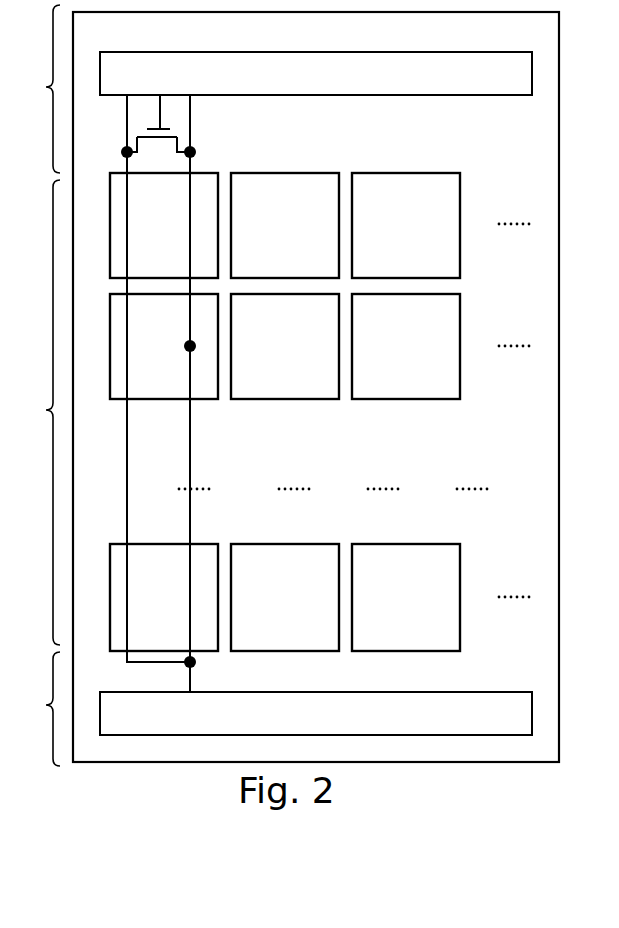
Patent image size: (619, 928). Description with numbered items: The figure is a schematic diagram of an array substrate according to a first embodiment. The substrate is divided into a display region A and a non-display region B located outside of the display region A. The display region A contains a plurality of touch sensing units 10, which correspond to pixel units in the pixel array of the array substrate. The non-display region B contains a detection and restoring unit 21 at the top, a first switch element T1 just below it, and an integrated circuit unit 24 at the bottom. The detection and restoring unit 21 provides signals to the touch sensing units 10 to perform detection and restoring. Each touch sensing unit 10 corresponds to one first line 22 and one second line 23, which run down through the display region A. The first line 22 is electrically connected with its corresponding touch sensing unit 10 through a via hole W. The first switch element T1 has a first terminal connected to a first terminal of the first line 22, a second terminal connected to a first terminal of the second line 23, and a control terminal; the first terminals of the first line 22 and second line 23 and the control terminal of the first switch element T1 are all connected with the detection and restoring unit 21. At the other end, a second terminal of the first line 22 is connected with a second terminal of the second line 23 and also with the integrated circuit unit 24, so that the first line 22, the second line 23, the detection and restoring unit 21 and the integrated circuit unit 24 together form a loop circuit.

The touch sensing unit 10 is at (320, 412).
The detection and restoring unit 21 is at (316, 73).
The first line 22 is at (204, 393).
The second line 23 is at (155, 378).
The integrated circuit unit 24 is at (316, 713).
The first switch element T1 is at (182, 123).
The via hole W is at (175, 360).
The display region A is at (37, 412).
The non-display region B is at (37, 385).